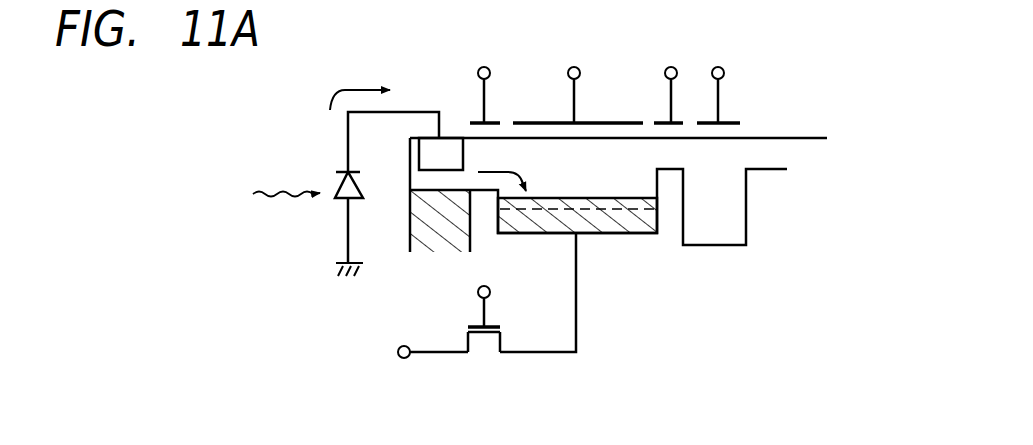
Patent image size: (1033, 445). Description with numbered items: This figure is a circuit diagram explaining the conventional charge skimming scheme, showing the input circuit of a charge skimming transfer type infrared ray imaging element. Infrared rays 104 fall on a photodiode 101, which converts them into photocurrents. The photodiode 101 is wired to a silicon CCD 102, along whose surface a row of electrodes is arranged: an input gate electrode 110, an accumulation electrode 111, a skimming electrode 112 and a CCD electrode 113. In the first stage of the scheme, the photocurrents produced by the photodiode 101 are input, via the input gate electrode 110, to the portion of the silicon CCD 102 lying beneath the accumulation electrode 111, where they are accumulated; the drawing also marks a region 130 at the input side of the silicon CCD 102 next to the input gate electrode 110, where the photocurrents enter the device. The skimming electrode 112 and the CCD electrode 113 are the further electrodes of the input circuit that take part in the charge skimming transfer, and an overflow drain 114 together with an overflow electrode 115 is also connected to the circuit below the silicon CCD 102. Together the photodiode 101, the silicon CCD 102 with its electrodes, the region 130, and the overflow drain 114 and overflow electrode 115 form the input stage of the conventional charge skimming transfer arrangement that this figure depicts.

The photodiode 101 is at (337, 201).
The silicon CCD 102 is at (793, 153).
The infrared rays 104 is at (288, 162).
The input gate electrode 110 is at (472, 125).
The accumulation electrode 111 is at (538, 122).
The skimming electrode 112 is at (660, 122).
The CCD electrode 113 is at (740, 122).
The overflow drain 114 is at (398, 360).
The overflow electrode 115 is at (475, 327).
The n+ region 130 is at (465, 157).